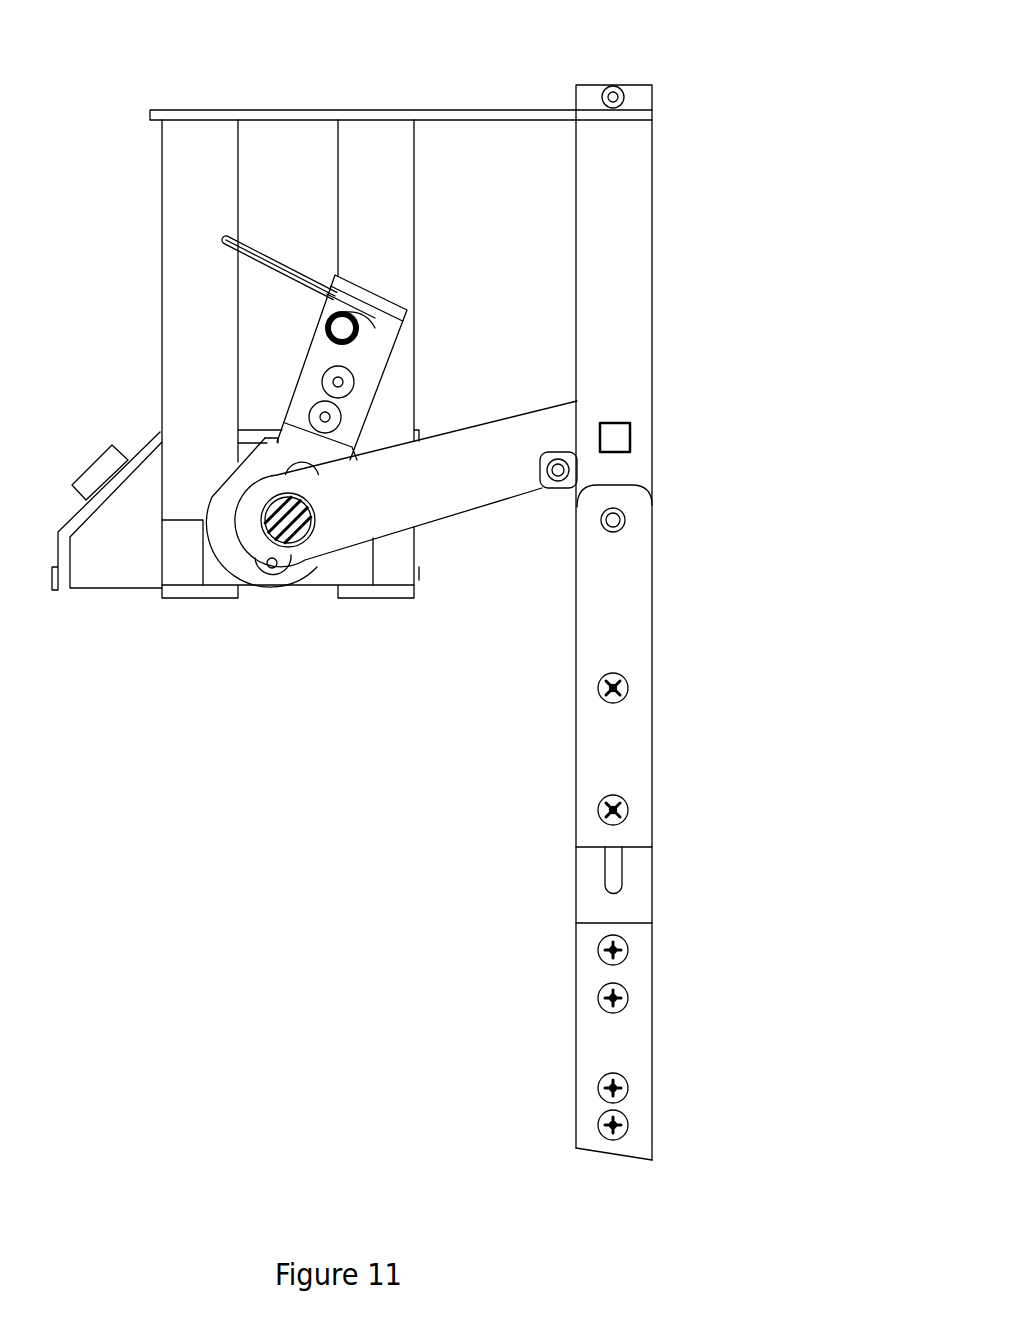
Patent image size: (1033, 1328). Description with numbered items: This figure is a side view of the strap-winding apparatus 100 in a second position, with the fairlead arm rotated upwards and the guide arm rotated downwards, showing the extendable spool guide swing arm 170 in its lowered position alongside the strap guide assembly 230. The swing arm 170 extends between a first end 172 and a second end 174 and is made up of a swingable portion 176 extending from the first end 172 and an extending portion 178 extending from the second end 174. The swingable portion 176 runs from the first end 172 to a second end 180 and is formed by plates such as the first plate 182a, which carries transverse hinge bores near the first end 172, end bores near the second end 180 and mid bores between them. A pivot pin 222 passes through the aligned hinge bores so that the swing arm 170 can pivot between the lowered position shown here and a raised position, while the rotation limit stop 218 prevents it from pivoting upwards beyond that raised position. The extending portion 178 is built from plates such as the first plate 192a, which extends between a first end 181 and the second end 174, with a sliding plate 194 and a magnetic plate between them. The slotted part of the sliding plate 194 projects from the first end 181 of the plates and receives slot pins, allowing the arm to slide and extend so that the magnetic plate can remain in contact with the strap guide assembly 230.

The apparatus for winding a strap into a roll 100 is at (668, 73).
The strap guide assembly 230 is at (214, 246).
The rotation limit stop 218 is at (566, 462).
The first end 172 is at (614, 483).
The pivot pin 222 is at (626, 518).
The swingable portion 176 is at (652, 585).
The first plate 182a is at (640, 643).
The extendable spool guide swing arm 170 is at (652, 697).
The second end 180 is at (652, 850).
The sliding plate 194 is at (652, 890).
The first end 181 is at (652, 923).
The extending portion 178 is at (652, 992).
The first plate 192a is at (640, 1038).
The second end 174 is at (622, 1158).